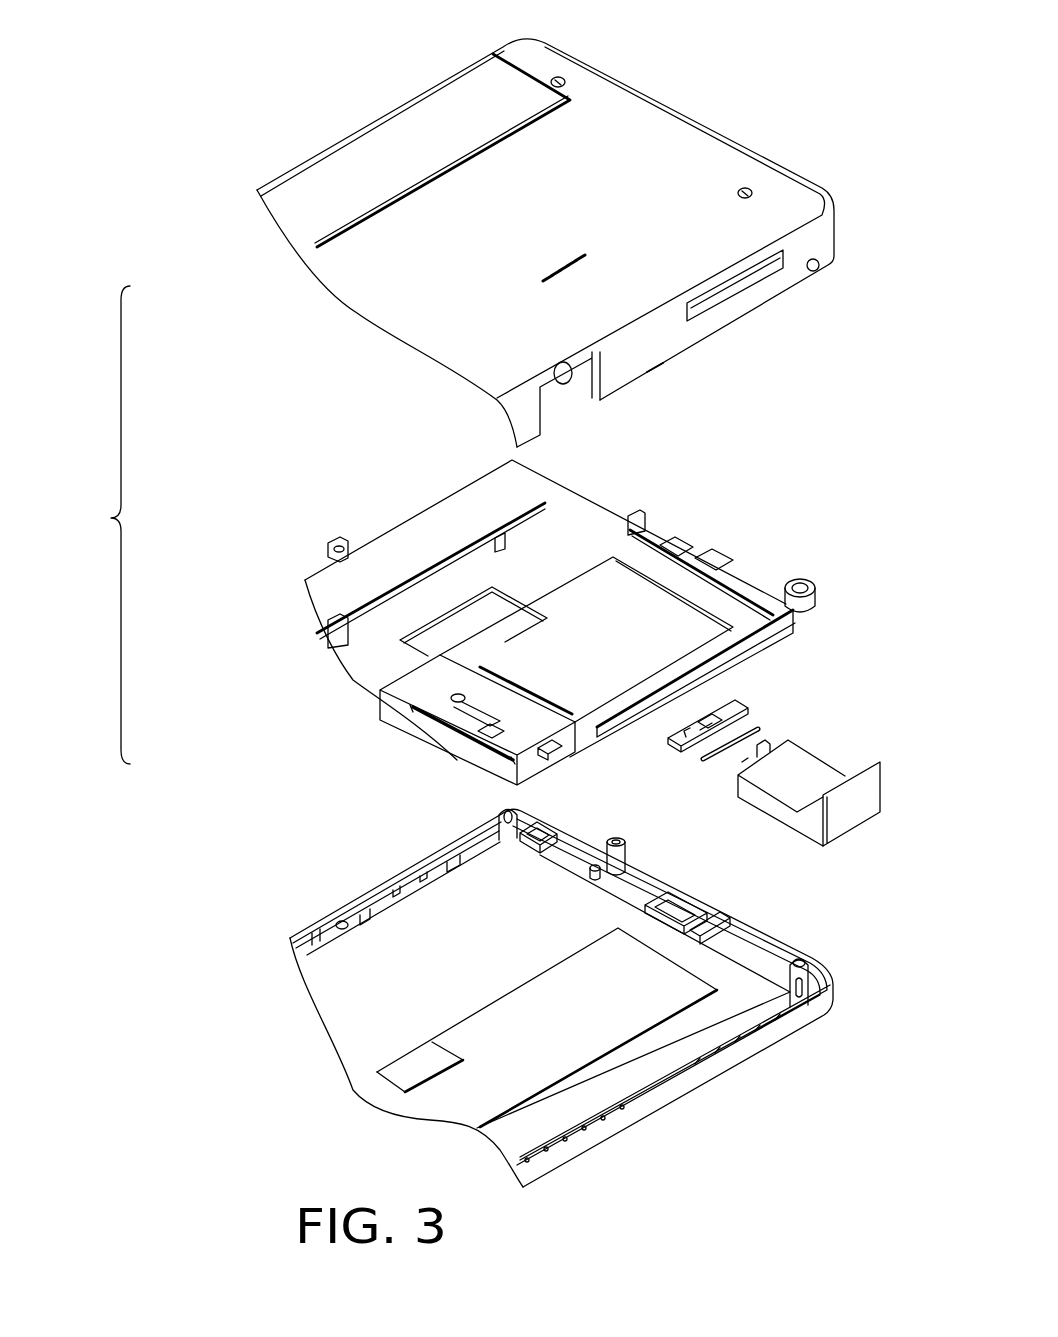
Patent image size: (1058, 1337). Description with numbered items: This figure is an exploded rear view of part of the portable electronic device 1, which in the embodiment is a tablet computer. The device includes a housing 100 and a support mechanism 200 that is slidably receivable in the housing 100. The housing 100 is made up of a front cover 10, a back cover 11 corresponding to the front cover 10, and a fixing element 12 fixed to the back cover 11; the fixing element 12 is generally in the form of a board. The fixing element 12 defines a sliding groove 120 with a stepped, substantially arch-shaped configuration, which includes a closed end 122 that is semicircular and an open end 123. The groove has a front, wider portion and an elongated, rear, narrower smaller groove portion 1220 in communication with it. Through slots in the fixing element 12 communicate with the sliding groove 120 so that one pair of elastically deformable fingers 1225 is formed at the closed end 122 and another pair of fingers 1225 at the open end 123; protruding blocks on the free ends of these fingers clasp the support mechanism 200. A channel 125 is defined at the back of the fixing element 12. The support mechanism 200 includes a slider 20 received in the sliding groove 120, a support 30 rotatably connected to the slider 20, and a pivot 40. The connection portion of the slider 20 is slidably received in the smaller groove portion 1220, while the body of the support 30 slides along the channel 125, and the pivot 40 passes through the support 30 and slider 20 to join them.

The portable electronic device 1 is at (245, 19).
The housing 100 is at (94, 525).
The front cover 10 is at (492, 959).
The back cover 11 is at (415, 158).
The fixing element 12 is at (323, 597).
The sliding groove 120 is at (628, 824).
The closed end 122 is at (493, 738).
The smaller groove portion 1220 is at (513, 728).
The elastically deformable fingers 1225 is at (463, 690).
The open end 123 is at (553, 750).
The channel 125 is at (488, 735).
The support mechanism 200 is at (867, 723).
The slider 20 is at (727, 713).
The pivot 40 is at (758, 729).
The support 30 is at (810, 772).